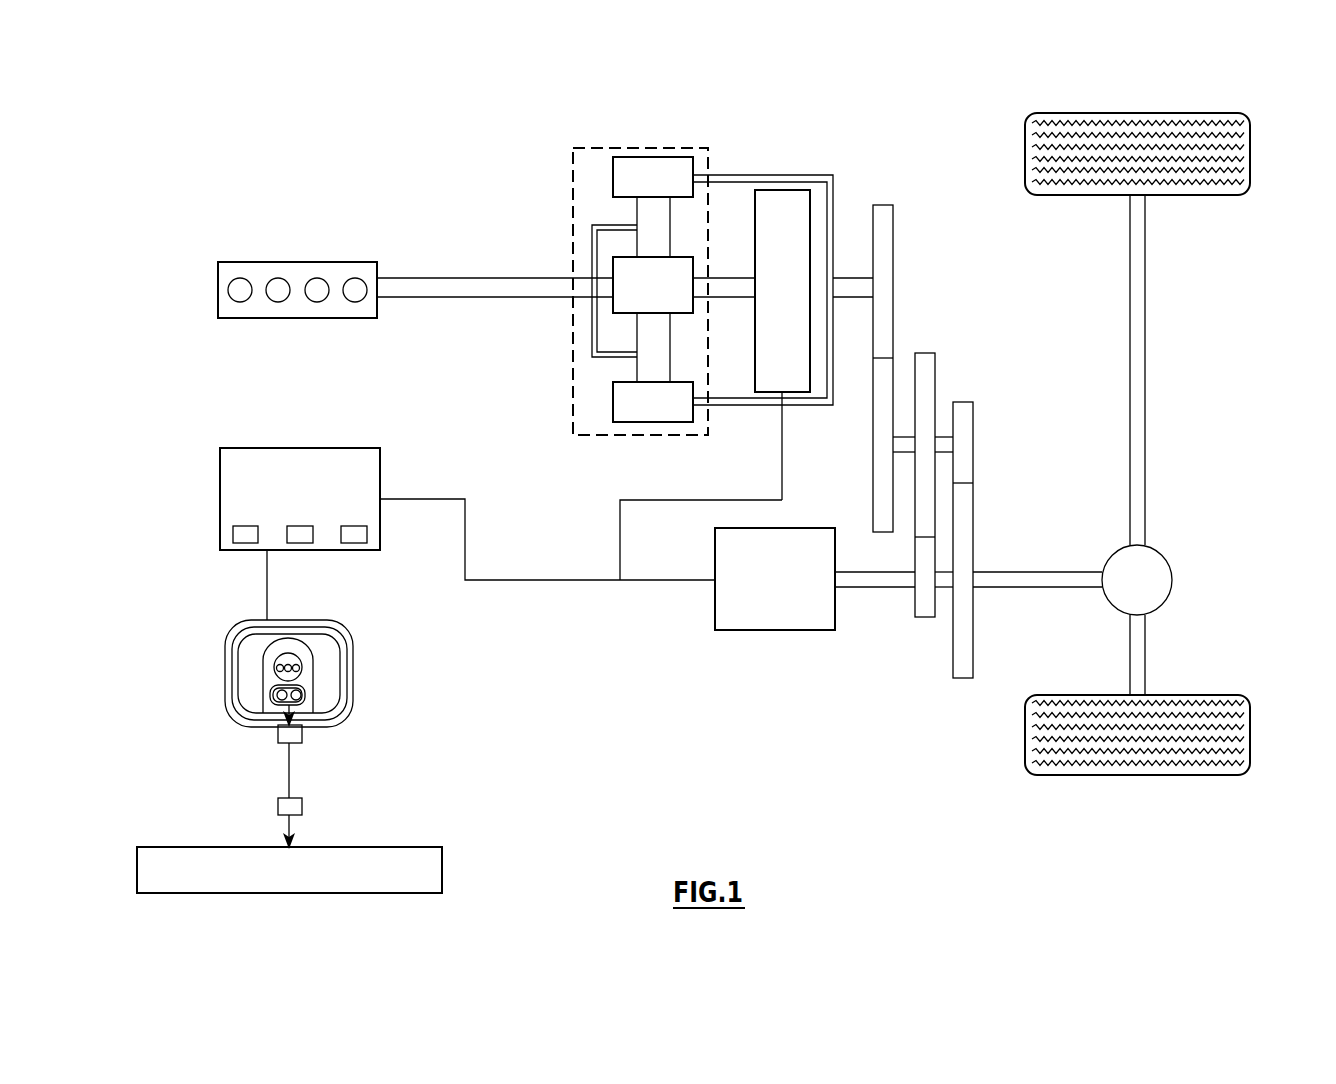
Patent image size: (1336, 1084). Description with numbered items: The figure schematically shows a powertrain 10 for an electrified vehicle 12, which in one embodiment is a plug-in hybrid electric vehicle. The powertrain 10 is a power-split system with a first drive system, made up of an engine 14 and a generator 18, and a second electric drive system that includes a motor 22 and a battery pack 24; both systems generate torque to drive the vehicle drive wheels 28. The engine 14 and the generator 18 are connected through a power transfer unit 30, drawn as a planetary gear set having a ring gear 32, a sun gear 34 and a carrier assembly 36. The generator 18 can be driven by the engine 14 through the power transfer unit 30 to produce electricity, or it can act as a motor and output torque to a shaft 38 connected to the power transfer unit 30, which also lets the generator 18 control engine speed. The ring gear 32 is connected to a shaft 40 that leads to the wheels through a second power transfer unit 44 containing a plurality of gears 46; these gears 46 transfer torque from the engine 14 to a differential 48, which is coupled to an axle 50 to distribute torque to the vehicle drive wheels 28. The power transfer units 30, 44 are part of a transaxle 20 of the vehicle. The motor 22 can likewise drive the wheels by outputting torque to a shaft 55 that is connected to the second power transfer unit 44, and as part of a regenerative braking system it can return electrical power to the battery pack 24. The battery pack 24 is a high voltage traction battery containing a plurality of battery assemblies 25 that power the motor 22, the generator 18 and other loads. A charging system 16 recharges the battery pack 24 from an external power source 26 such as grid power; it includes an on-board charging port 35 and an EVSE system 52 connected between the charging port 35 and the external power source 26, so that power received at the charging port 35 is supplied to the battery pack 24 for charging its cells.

The powertrain 10 is at (432, 174).
The electrified vehicle 12 is at (802, 124).
The engine 14 is at (236, 262).
The charging system 16 is at (207, 678).
The generator 18 is at (762, 190).
The transaxle 20 is at (864, 206).
The motor 22 is at (835, 617).
The battery pack 24 is at (237, 448).
The battery assemblies 25 is at (258, 533).
The external power source 26 is at (442, 870).
The vehicle drive wheels 28 is at (1250, 732).
The power transfer unit 30 is at (572, 398).
The ring gear 32 is at (613, 173).
The sun gear 34 is at (613, 264).
The charge port 35 is at (280, 603).
The carrier assembly 36 is at (592, 347).
The shaft 38 is at (723, 277).
The shaft 40 is at (853, 278).
The second power transfer unit 44 is at (957, 320).
The gears 46 is at (893, 325).
The differential 48 is at (1167, 598).
The axle 50 is at (1147, 361).
The EVSE system 52 is at (300, 763).
The shaft 55 is at (885, 589).